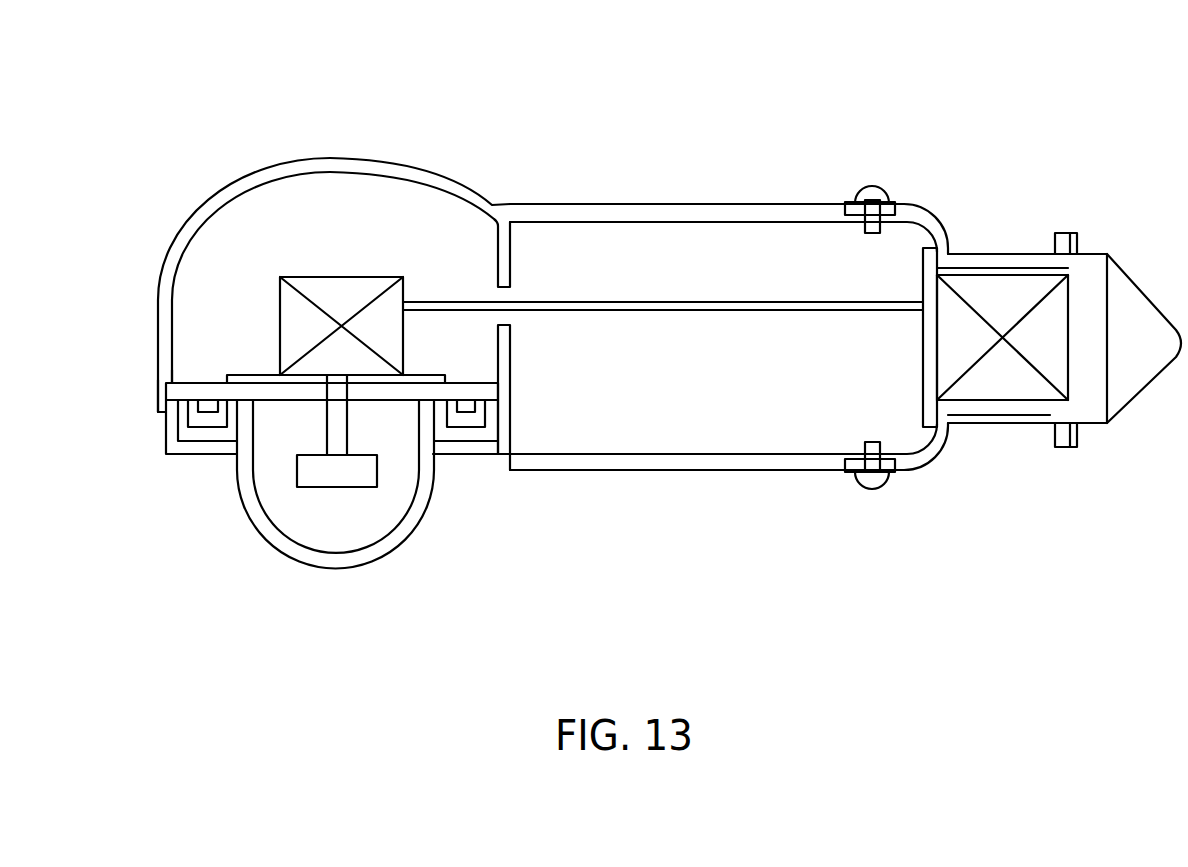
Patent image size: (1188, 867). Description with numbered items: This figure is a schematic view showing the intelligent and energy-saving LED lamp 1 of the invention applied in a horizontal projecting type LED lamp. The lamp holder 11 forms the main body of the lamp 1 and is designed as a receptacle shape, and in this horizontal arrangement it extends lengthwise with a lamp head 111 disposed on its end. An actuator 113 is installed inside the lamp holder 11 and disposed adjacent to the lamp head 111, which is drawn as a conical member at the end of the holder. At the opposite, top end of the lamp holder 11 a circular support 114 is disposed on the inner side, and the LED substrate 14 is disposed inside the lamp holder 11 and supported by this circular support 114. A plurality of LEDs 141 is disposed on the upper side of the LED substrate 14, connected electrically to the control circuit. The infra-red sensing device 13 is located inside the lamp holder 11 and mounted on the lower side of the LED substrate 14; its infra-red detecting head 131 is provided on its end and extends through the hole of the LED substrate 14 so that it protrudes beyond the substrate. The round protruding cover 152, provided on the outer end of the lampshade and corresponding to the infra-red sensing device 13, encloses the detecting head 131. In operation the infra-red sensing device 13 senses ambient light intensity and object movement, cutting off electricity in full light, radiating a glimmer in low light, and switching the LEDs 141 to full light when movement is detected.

The LED lamp 1 is at (601, 143).
The lamp holder 11 is at (643, 470).
The lamp head 111 is at (1103, 253).
The actuator 113 is at (973, 307).
The circular support 114 is at (168, 383).
The infra-red sensing device 13 is at (333, 315).
The infra-red detecting head 131 is at (358, 472).
The LED substrate 14 is at (205, 393).
The LEDs 141 is at (200, 404).
The protruding cover 152 is at (333, 568).